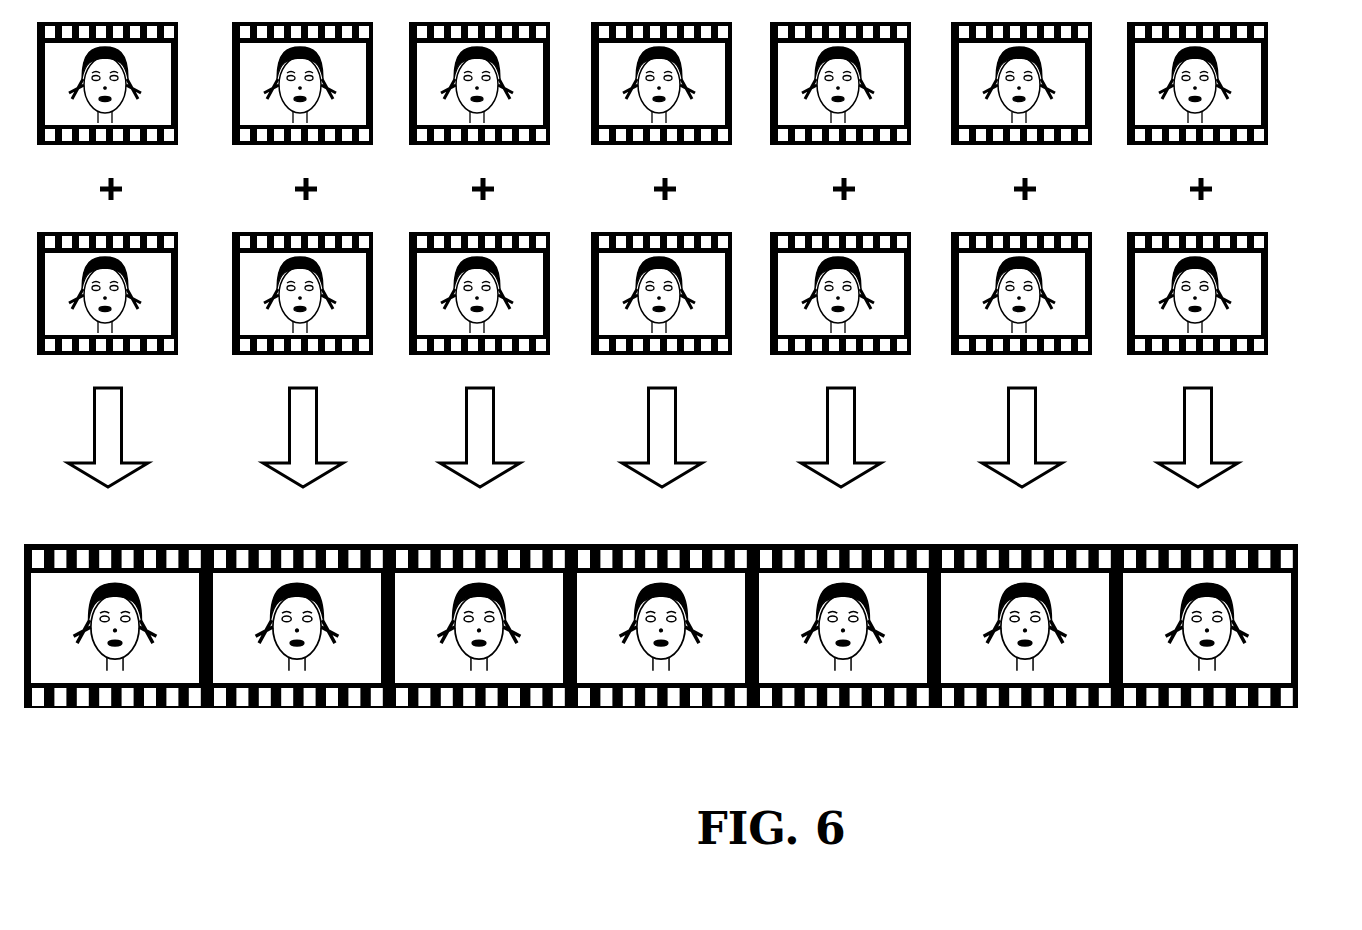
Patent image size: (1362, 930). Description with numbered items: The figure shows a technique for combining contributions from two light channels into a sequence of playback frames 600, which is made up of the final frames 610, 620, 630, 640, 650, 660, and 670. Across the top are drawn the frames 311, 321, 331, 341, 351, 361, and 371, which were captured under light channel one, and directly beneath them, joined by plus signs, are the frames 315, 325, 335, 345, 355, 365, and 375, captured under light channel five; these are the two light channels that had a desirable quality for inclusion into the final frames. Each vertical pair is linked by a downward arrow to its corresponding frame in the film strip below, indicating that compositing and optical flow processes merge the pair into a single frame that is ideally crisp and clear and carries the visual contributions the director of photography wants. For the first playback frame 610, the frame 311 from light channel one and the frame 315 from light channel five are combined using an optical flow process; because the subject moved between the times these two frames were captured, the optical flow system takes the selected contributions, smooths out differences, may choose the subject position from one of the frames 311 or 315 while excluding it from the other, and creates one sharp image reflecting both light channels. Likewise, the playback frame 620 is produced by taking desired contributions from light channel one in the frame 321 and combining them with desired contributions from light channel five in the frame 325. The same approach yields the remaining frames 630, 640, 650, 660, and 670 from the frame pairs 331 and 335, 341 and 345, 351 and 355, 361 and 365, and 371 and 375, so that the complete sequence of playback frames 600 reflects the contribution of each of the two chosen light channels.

The frame 311 is at (107, 83).
The frame 321 is at (302, 83).
The frame 331 is at (479, 83).
The frame 341 is at (661, 83).
The frame 351 is at (840, 83).
The frame 361 is at (1021, 83).
The frame 371 is at (1197, 83).
The frame 315 is at (107, 293).
The frame 325 is at (302, 293).
The frame 335 is at (479, 293).
The frame 345 is at (661, 293).
The frame 355 is at (840, 293).
The frame 365 is at (1021, 293).
The frame 375 is at (1197, 293).
The playback frame 610 is at (116, 647).
The playback frame 620 is at (298, 647).
The playback frame 630 is at (480, 647).
The playback frame 640 is at (662, 647).
The playback frame 650 is at (844, 647).
The playback frame 660 is at (1026, 647).
The playback frame 670 is at (1208, 647).
The sequence of playback frames 600 is at (686, 661).